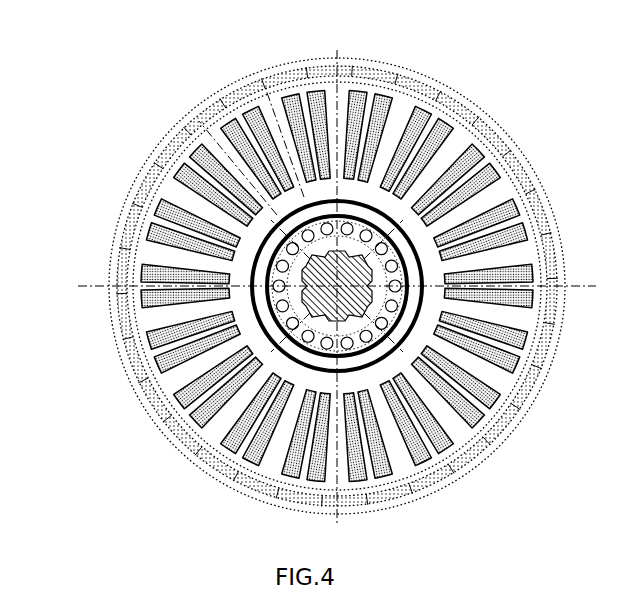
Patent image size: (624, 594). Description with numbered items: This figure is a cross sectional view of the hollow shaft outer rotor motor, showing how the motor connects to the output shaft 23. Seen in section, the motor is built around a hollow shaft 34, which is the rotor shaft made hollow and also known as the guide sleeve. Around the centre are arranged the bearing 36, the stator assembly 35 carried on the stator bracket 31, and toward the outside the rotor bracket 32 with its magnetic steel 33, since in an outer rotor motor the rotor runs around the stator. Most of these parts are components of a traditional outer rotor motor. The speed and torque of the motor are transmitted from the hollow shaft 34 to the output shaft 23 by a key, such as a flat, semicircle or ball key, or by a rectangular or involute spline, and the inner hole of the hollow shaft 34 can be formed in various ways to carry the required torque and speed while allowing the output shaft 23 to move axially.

The output shaft 23 is at (446, 168).
The stator bracket 31 is at (294, 264).
The rotor bracket 32 is at (282, 286).
The magnetic steel 33 is at (285, 286).
The hollow shaft 34 is at (354, 193).
The stator assembly 35 is at (278, 286).
The bearing 1 36 is at (337, 260).